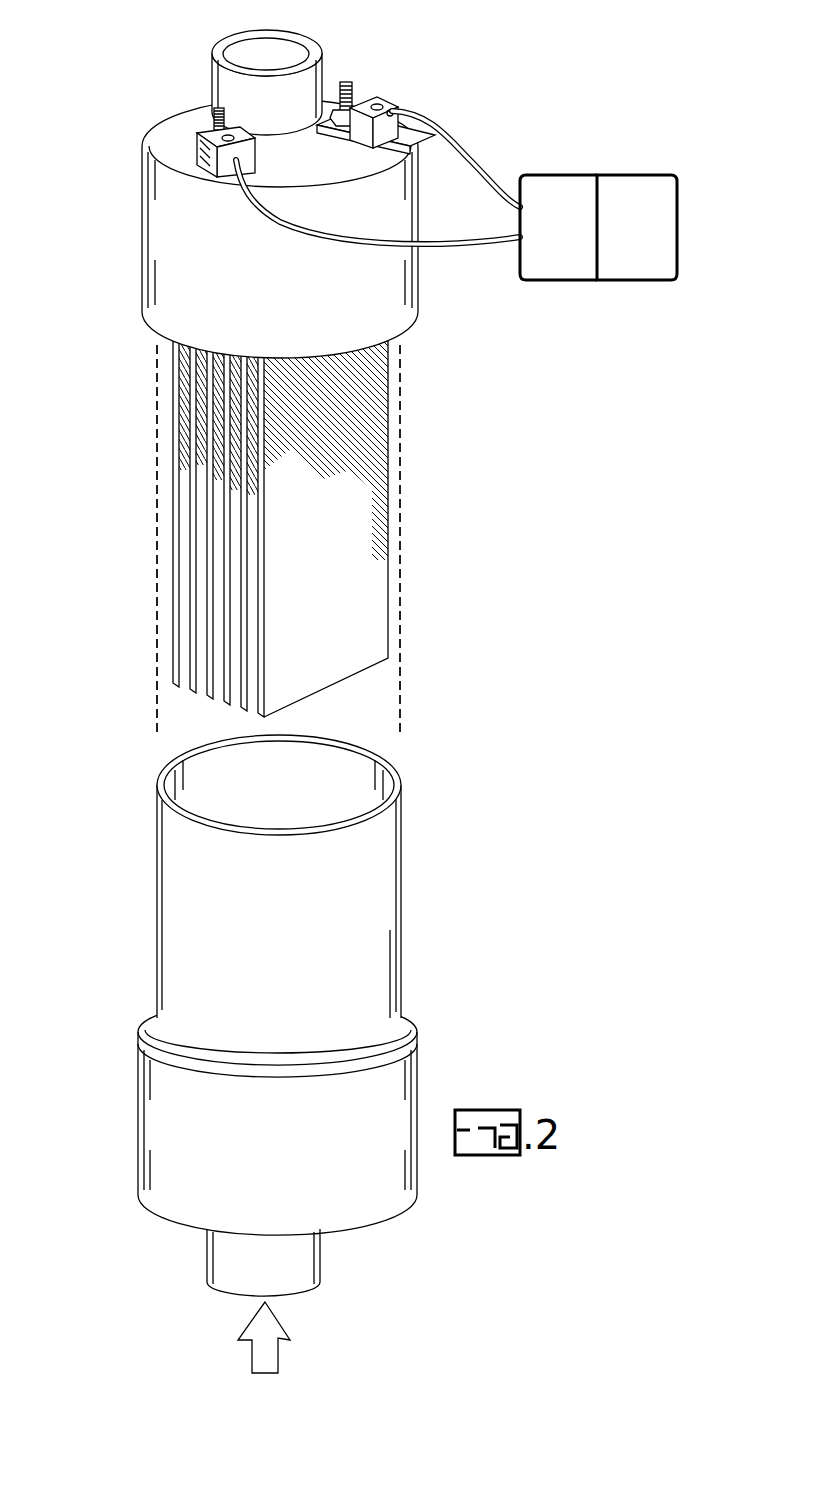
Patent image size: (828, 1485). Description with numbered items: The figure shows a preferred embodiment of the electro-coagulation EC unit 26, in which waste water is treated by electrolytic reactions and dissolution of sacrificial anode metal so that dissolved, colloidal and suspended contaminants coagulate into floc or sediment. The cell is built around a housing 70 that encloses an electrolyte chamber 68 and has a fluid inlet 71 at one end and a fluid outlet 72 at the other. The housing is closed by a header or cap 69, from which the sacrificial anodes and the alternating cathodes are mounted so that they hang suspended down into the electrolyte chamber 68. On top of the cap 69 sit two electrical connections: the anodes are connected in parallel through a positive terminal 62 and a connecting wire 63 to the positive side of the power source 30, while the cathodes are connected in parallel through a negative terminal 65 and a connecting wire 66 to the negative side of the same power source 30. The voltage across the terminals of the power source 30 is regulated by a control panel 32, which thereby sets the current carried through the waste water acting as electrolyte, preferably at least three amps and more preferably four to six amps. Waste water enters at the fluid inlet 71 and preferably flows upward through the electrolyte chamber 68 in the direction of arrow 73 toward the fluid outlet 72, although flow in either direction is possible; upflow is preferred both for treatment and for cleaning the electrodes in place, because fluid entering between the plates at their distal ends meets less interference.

The EC unit 26 is at (500, 446).
The power source 30 is at (553, 280).
The control panel 32 is at (625, 280).
The positive terminal 62 is at (190, 136).
The connecting wire 63 is at (397, 247).
The negative terminal 65 is at (400, 104).
The connecting wire 66 is at (467, 168).
The electrolyte chamber 68 is at (352, 778).
The cap 69 is at (150, 213).
The housing 70 is at (347, 978).
The fluid inlet 71 is at (232, 1256).
The fluid outlet 72 is at (300, 32).
The arrow 73 is at (272, 1318).